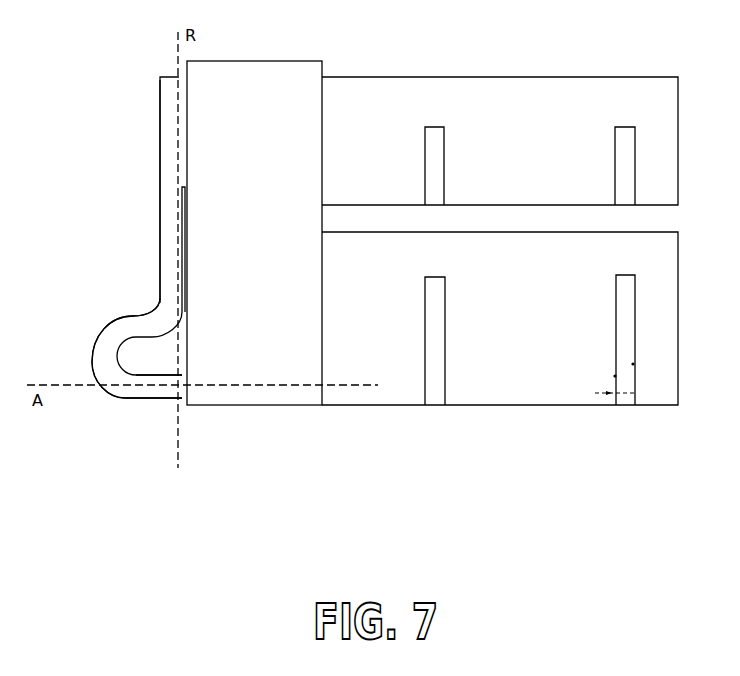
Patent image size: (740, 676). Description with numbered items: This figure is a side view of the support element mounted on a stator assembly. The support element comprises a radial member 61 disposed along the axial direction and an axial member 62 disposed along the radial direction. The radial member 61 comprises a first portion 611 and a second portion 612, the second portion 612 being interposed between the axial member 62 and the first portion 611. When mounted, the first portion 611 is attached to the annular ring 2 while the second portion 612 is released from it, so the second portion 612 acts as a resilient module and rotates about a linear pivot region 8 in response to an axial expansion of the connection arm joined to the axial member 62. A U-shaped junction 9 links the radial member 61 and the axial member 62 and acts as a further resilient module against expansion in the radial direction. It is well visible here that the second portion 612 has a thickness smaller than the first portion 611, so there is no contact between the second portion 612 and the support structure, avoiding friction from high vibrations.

The annular ring 2 is at (249, 75).
The radial member 61 is at (148, 94).
The first portion 611 is at (168, 125).
The second portion 612 is at (167, 243).
The linear pivot region 8 is at (181, 176).
The U-shaped junction 9 is at (83, 365).
The axial member 62 is at (127, 398).